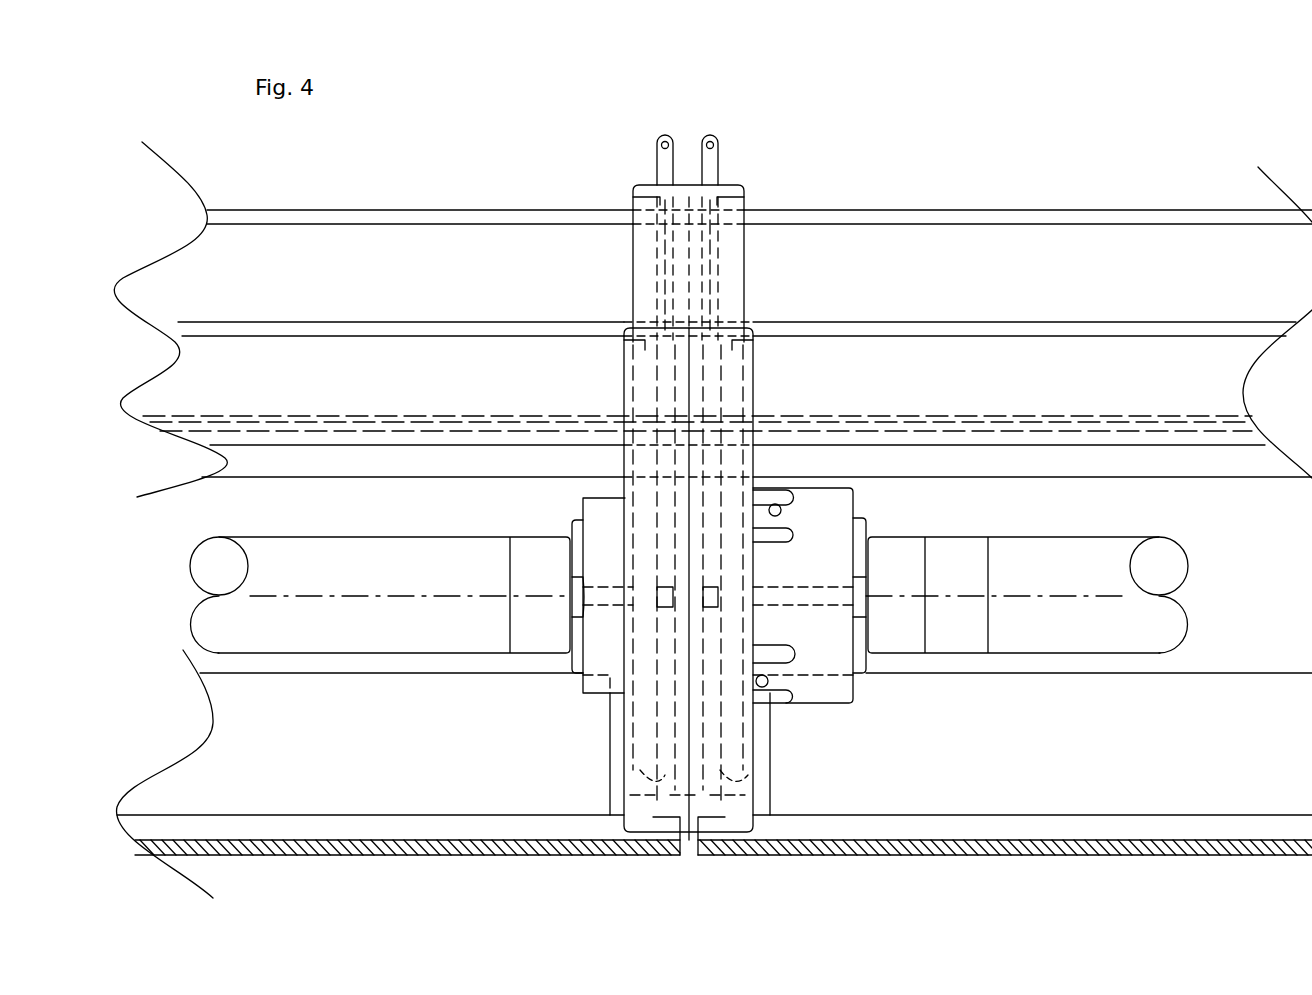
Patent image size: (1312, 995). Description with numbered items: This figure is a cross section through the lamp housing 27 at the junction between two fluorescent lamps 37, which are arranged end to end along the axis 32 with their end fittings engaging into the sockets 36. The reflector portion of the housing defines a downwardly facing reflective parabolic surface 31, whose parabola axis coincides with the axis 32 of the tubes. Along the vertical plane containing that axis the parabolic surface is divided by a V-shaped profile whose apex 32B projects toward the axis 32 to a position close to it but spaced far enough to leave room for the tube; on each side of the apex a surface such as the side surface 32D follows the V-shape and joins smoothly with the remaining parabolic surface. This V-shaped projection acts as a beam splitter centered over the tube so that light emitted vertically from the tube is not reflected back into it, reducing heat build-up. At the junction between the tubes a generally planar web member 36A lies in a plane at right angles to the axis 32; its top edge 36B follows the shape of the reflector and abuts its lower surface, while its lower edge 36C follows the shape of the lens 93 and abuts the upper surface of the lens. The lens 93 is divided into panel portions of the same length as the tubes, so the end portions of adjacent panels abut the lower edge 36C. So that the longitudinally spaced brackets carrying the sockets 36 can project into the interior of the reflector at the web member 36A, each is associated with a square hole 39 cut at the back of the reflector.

The web member 36A is at (686, 150).
The top edge 36B is at (883, 226).
The lamp housing 27 is at (955, 213).
The reflective parabolic surface 31 is at (1058, 232).
The square hole 39 is at (722, 252).
The V-shape side surface 32D is at (928, 355).
The apex 32B is at (993, 432).
The socket 36 is at (605, 520).
The fluorescent lamp 37 is at (372, 545).
The axis 32 is at (1003, 596).
The lens 93 is at (413, 848).
The lower edge 36C is at (665, 836).